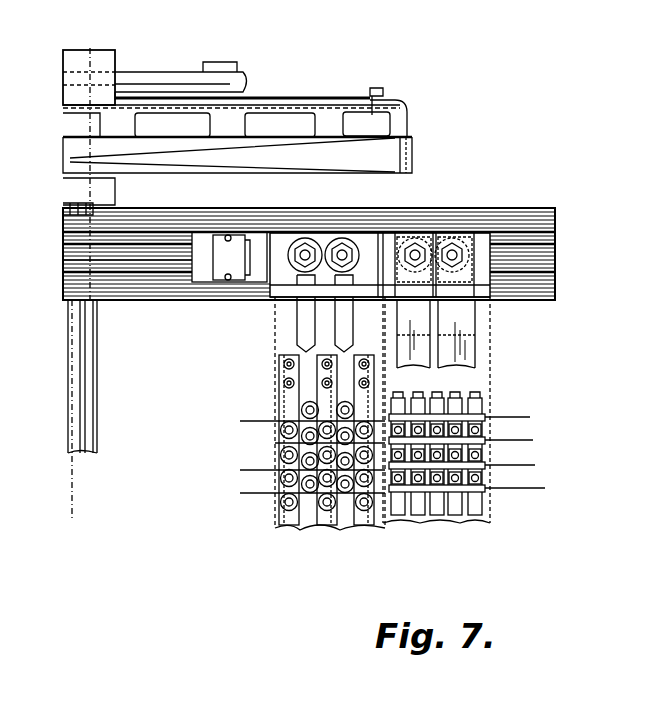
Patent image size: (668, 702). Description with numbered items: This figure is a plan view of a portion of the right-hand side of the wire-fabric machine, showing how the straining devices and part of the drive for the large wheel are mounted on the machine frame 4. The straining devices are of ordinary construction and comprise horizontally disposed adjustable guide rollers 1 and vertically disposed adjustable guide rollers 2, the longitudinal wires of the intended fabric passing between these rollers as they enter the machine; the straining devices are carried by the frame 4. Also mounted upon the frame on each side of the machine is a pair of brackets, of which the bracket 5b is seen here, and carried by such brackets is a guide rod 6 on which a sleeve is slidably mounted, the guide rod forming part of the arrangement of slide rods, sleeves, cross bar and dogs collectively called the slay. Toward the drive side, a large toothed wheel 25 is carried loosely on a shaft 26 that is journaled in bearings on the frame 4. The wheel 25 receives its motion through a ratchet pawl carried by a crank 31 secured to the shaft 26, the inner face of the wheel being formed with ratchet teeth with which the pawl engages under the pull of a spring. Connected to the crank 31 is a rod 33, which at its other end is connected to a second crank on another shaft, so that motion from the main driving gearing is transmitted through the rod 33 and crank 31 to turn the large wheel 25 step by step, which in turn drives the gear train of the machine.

The horizontally disposed adjustable guide rollers 1 is at (398, 412).
The vertically disposed adjustable guide rollers 2 is at (275, 448).
The machine frame 4 is at (293, 190).
The bracket 5b is at (229, 257).
The guide rod 6 is at (168, 260).
The large toothed wheel 25 is at (414, 158).
The shaft 26 is at (96, 210).
The crank 31 is at (342, 68).
The rod 33 is at (190, 53).